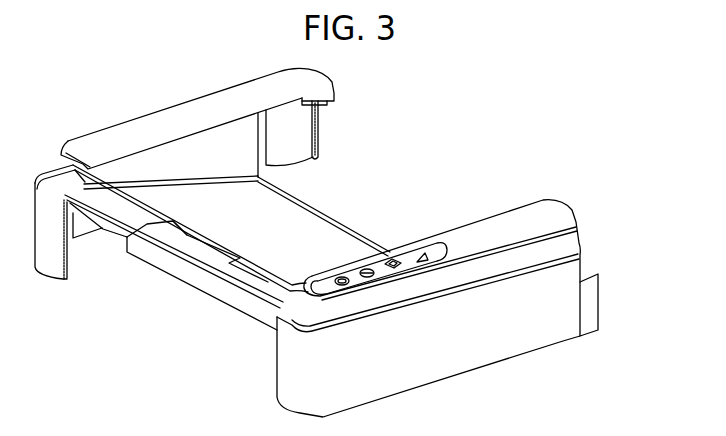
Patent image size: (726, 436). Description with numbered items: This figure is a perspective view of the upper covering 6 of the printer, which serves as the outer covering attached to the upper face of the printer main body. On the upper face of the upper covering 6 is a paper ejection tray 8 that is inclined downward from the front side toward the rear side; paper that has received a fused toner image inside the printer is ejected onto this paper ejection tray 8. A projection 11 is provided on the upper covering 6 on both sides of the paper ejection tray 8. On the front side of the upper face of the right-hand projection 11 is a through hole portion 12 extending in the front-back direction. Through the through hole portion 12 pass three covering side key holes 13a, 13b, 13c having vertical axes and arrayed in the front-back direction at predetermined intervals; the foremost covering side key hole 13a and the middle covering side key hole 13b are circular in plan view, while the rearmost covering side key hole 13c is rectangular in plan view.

The upper covering 6 is at (349, 231).
The paper ejection tray 8 is at (235, 200).
The projection 11 is at (202, 113).
The through hole portion 12 is at (380, 222).
The foremost covering side key hole 13a is at (346, 276).
The middle covering side key hole 13b is at (370, 268).
The rearmost covering side key hole 13c is at (398, 246).